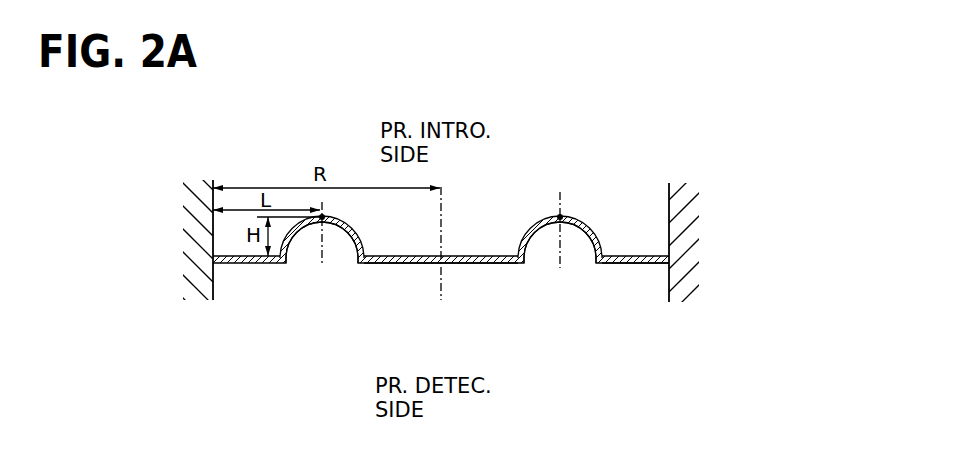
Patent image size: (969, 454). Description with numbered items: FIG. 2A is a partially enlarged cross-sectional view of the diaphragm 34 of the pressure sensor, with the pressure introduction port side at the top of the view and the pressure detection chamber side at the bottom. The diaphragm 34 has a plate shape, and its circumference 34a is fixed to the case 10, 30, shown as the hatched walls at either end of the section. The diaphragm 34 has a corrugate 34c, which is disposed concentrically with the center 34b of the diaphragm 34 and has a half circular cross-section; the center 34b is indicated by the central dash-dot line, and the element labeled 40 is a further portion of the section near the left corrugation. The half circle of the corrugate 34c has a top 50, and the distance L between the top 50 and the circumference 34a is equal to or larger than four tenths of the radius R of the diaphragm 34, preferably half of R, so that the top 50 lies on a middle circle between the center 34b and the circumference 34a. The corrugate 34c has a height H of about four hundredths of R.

The pressure sensor 10 is at (492, 245).
The housing 30 is at (677, 233).
The diaphragm 34 is at (636, 256).
The circumference of the diaphragm 34a is at (665, 265).
The center of the diaphragm 34b is at (423, 268).
The corrugate 34c is at (533, 251).
The corrugation 40 is at (322, 297).
The top of the corrugate 50 is at (322, 217).